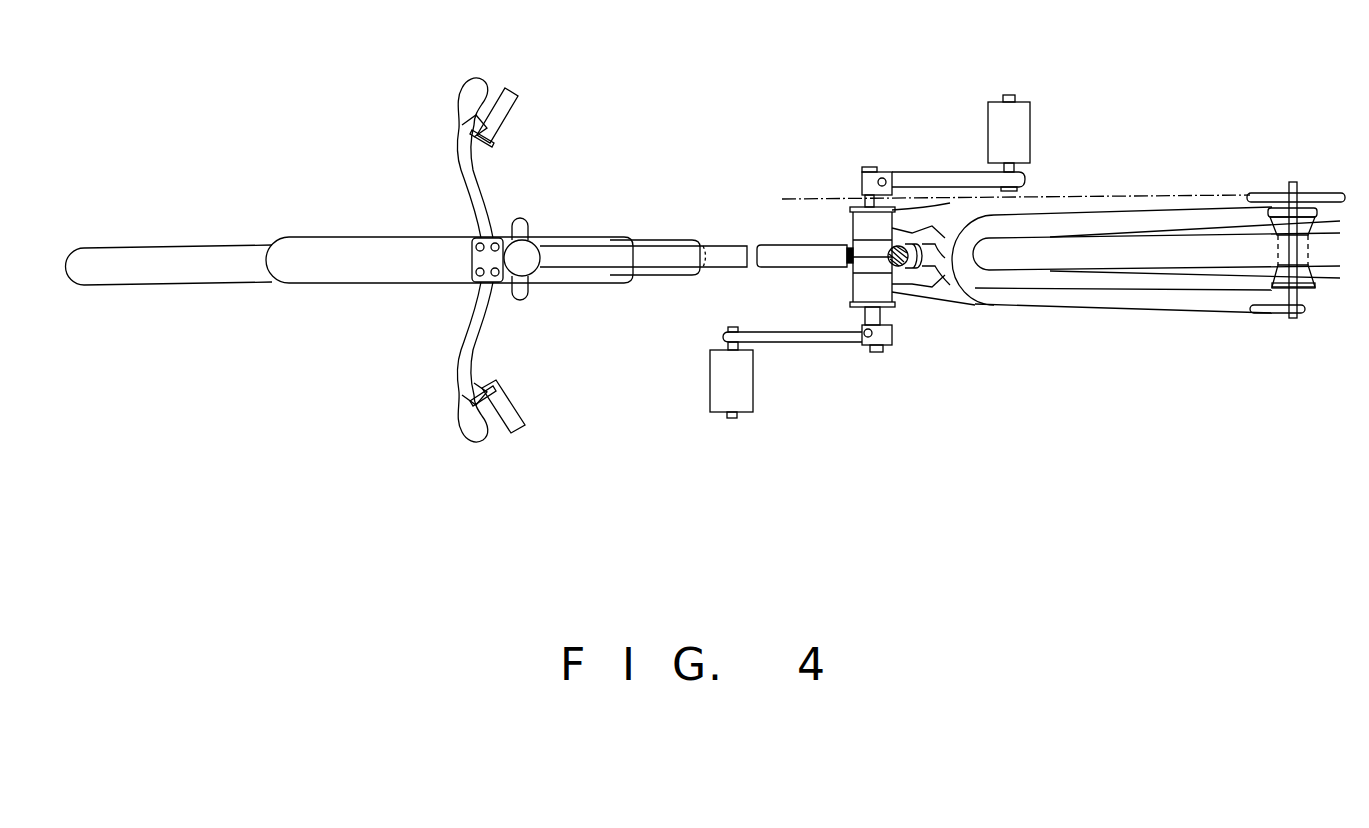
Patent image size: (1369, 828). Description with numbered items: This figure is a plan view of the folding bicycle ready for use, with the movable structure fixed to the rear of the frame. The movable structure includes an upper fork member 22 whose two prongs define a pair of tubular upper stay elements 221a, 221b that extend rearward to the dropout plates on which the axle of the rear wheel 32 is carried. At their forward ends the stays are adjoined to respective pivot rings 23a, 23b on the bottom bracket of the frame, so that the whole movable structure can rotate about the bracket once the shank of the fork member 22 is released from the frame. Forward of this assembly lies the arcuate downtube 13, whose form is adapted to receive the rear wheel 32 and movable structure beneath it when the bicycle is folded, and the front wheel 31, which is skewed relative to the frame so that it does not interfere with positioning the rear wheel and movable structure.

The arcuate downtube 13 is at (782, 257).
The upper fork member 22 is at (940, 215).
The pivot ring 23a is at (863, 222).
The pivot ring 23b is at (860, 287).
The front wheel 31 is at (183, 270).
The rear wheel 32 is at (973, 290).
The upper stay element 221a is at (1083, 205).
The upper stay element 221b is at (1057, 297).